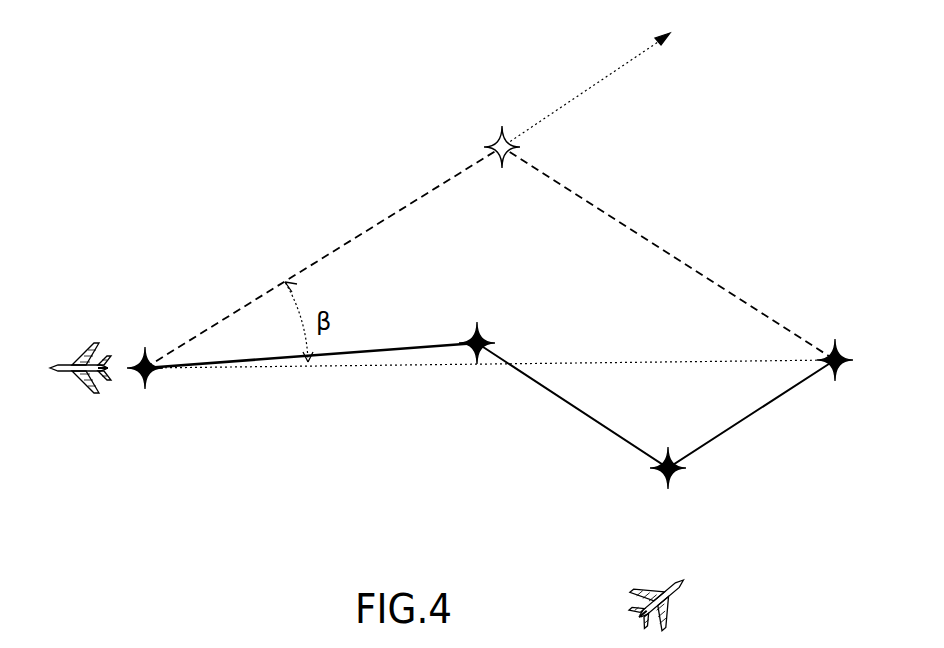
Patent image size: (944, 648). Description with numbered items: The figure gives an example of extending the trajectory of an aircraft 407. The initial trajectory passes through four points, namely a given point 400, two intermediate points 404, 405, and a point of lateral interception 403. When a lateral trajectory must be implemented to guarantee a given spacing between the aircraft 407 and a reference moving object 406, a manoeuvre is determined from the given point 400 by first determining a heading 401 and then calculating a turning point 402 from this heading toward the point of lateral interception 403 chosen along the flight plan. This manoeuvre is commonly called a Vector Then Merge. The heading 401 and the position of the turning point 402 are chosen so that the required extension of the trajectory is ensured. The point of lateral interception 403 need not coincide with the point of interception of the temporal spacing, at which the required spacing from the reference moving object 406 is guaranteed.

The given point 400 is at (140, 353).
The heading 401 is at (598, 80).
The turning point 402 is at (492, 144).
The point of lateral interception 403 is at (840, 352).
The point of the initial trajectory 404 is at (467, 352).
The point of the initial trajectory 405 is at (677, 477).
The reference moving object 406 is at (687, 598).
The aircraft 407 is at (73, 360).